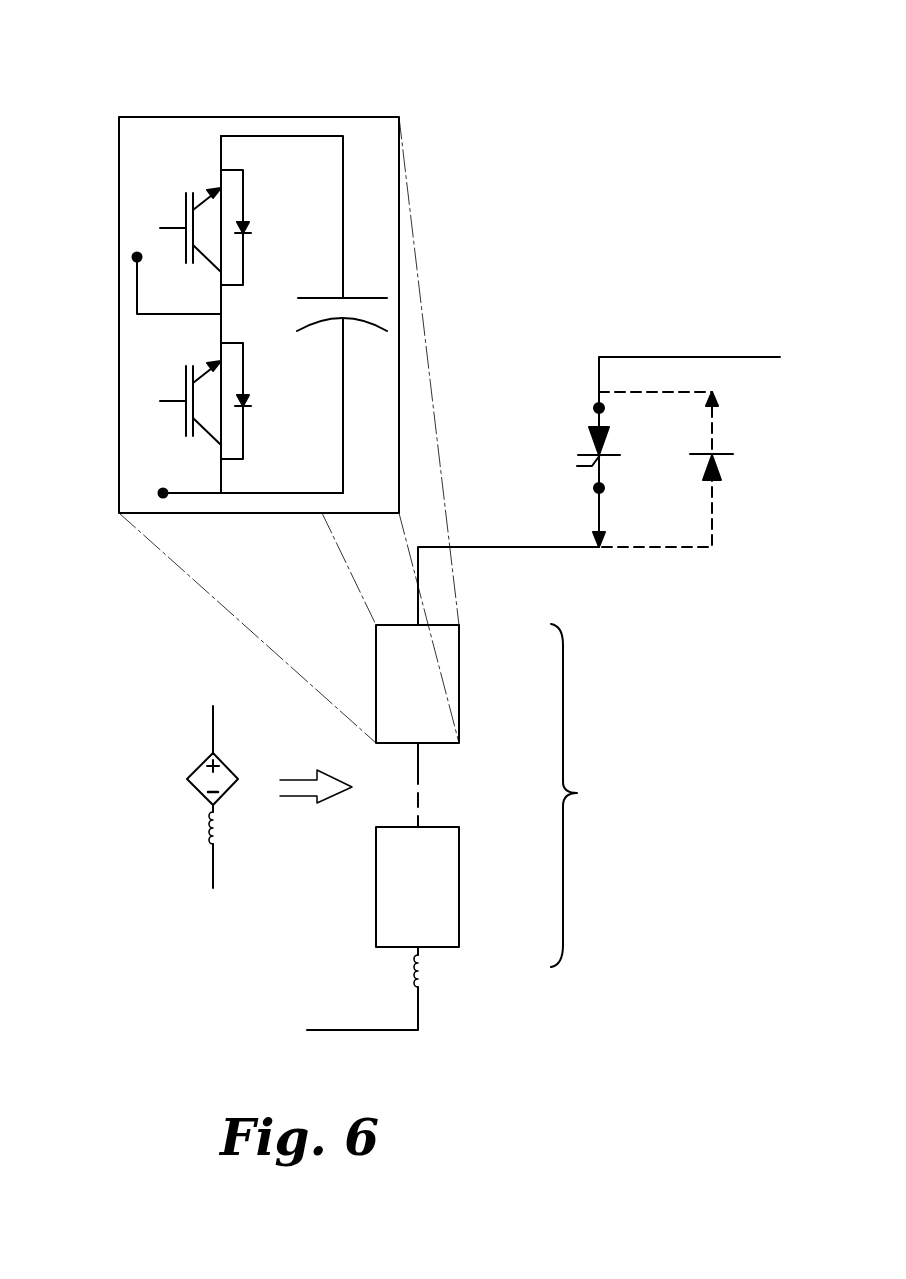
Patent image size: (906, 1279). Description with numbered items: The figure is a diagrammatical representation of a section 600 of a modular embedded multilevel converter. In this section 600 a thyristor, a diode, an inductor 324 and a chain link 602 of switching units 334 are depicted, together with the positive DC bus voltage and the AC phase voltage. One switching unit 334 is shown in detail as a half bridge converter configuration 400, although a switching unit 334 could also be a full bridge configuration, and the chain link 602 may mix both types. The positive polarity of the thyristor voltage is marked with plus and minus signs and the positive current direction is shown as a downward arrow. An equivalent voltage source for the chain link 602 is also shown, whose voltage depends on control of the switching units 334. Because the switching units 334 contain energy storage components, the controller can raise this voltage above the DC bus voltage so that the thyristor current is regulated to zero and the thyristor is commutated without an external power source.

The section 600 is at (100, 38).
The half bridge converter configuration 400 is at (119, 172).
The switching unit 334 is at (459, 683).
The chain link 602 is at (590, 795).
The inductor 324 is at (404, 970).